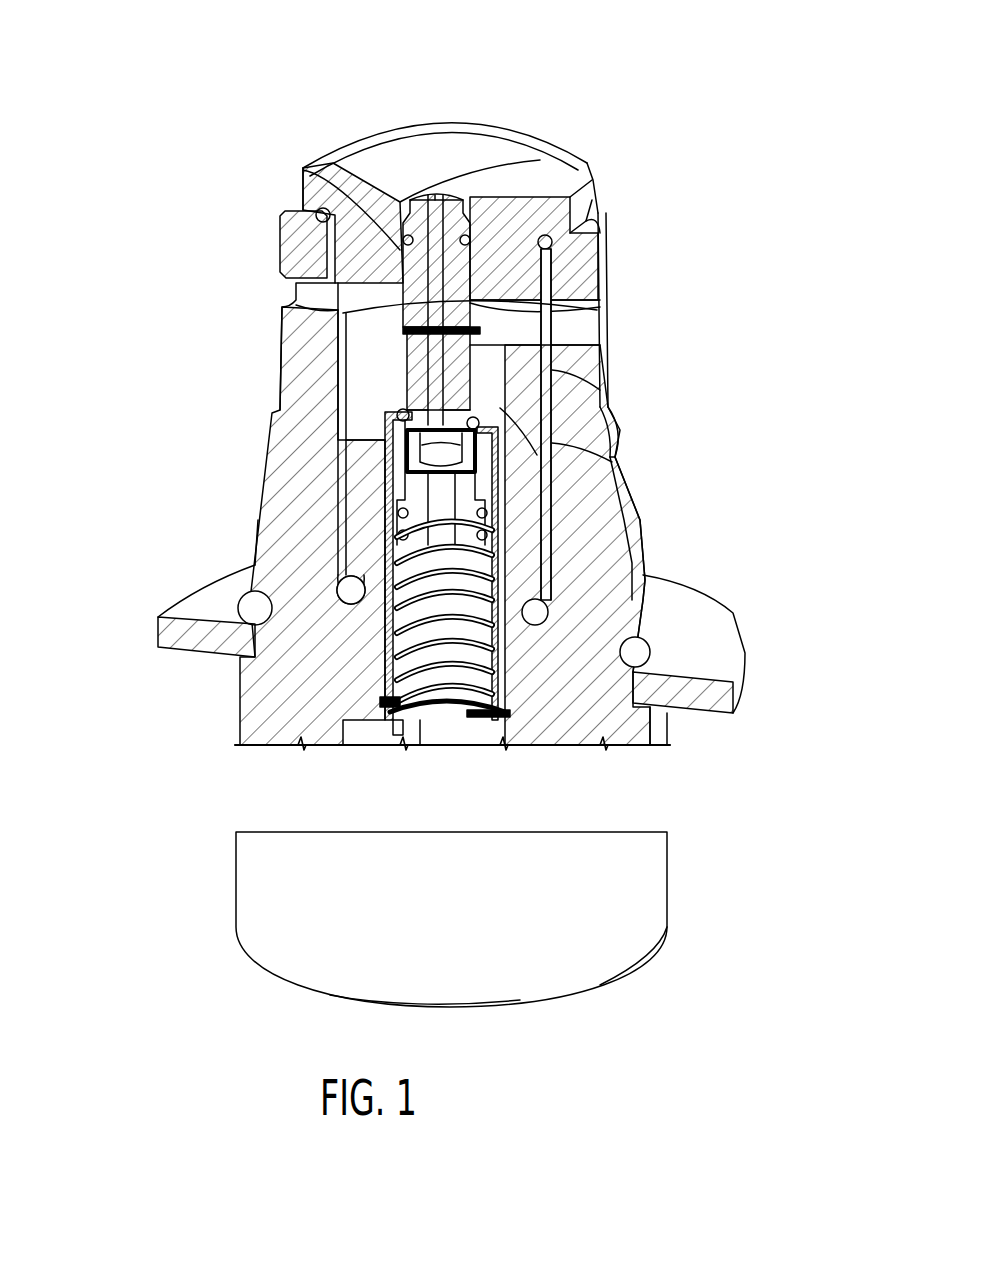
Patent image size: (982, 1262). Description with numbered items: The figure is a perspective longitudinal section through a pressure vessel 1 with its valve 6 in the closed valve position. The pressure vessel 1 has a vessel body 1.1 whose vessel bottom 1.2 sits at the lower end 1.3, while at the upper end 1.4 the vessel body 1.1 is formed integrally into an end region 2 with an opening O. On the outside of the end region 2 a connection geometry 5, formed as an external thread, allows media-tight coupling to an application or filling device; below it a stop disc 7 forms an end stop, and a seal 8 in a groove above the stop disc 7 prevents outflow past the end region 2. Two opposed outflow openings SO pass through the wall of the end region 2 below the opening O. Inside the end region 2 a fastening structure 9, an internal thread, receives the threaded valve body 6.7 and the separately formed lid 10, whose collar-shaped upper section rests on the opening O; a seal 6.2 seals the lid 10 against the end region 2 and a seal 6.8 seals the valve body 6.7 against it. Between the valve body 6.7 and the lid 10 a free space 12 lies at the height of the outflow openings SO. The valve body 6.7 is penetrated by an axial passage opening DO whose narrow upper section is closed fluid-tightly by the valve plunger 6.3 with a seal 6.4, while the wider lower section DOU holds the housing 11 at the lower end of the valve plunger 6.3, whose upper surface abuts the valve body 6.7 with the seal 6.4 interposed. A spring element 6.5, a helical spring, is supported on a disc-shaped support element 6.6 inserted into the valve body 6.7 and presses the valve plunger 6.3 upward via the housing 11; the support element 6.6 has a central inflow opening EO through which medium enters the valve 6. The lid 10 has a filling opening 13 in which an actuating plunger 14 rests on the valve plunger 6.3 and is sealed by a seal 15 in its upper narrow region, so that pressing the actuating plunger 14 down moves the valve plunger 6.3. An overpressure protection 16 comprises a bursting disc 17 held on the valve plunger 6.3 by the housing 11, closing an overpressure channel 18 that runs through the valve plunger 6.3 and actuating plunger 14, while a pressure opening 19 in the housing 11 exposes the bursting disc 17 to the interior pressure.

The pressure vessel 1 is at (308, 102).
The vessel body 1.1 is at (237, 722).
The vessel bottom 1.2 is at (510, 1007).
The lower end 1.3 is at (592, 965).
The upper end 1.4 is at (582, 163).
The end region 2 is at (300, 373).
The connection geometry 5 is at (279, 251).
The valve 6 is at (528, 393).
The seal 6.2 is at (302, 167).
The valve plunger 6.3 is at (613, 463).
The seal 6.4 is at (387, 418).
The spring element 6.5 is at (668, 736).
The support element 6.6 is at (491, 702).
The valve body 6.7 is at (610, 447).
The seal 6.8 is at (340, 593).
The stop disc 7 is at (177, 637).
The seal 8 is at (240, 608).
The fastening structure 9 is at (329, 403).
The lid 10 is at (513, 223).
The housing 11 is at (443, 527).
The free space 12 is at (547, 300).
The filling opening 13 is at (444, 195).
The actuating plunger 14 is at (278, 219).
The seal 15 is at (402, 198).
The overpressure protection 16 is at (423, 505).
The bursting disc 17 is at (472, 495).
The overpressure channel 18 is at (446, 366).
The pressure opening 19 is at (738, 616).
The opening O is at (316, 208).
The outflow openings SO is at (305, 296).
The passage opening DO is at (403, 362).
The lower section of the passage opening DOU is at (383, 540).
The inflow opening EO is at (451, 712).